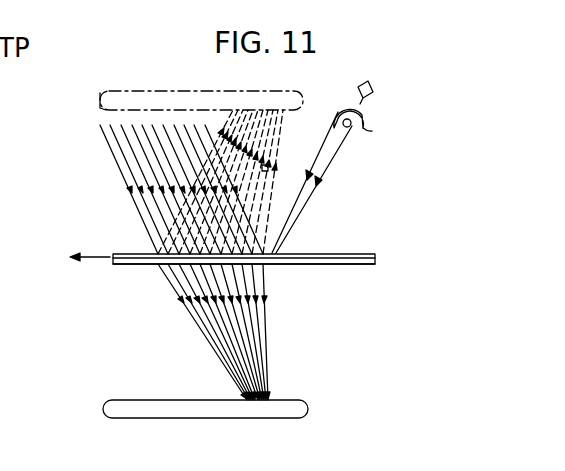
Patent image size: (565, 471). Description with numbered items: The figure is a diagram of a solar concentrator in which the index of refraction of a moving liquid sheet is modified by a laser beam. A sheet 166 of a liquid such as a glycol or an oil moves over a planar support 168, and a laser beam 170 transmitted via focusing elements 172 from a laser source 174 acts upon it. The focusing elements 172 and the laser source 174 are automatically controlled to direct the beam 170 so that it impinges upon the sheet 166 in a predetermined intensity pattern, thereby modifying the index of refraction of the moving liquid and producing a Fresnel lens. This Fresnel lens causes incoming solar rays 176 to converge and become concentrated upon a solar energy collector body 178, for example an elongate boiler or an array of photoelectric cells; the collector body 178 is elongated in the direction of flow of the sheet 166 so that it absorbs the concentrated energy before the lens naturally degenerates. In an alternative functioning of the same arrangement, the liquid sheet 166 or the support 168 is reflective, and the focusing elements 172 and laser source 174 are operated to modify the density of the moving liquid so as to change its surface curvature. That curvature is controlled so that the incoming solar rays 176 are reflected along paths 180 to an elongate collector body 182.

The sheet 166 is at (345, 253).
The planar support 168 is at (337, 265).
The laser beam 170 is at (323, 178).
The focusing elements 172 is at (366, 122).
The laser source 174 is at (370, 94).
The solar rays 176 is at (134, 184).
The solar energy collector body 178 is at (145, 400).
The paths 180 is at (270, 172).
The elongate collector body 182 is at (100, 100).